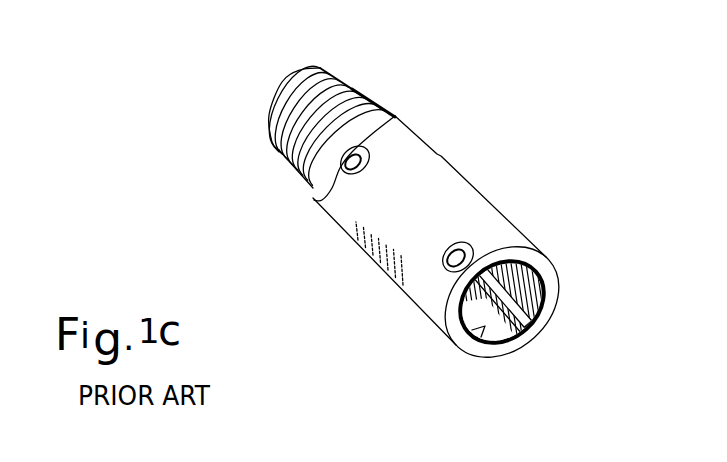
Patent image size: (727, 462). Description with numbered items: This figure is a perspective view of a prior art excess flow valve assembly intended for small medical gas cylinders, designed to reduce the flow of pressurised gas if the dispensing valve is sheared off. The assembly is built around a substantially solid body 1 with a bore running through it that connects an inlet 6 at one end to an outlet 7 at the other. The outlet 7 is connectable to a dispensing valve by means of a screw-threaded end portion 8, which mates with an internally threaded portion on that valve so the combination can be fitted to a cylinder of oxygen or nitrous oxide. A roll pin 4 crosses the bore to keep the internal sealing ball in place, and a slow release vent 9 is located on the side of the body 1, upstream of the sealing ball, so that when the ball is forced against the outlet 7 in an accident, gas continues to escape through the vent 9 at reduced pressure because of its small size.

The body 1 is at (452, 197).
The roll pin 4 is at (536, 274).
The inlet 6 is at (481, 332).
The outlet 7 is at (286, 86).
The screw-threaded end portion 8 is at (365, 88).
The slow release vent 9 is at (343, 176).